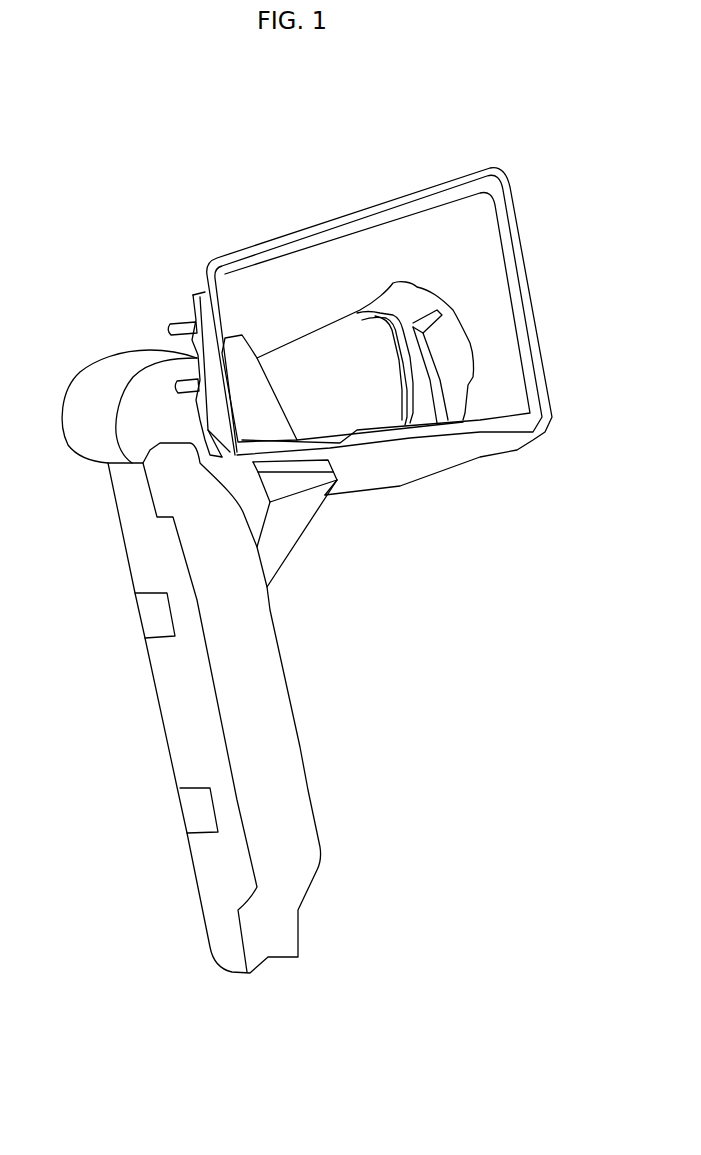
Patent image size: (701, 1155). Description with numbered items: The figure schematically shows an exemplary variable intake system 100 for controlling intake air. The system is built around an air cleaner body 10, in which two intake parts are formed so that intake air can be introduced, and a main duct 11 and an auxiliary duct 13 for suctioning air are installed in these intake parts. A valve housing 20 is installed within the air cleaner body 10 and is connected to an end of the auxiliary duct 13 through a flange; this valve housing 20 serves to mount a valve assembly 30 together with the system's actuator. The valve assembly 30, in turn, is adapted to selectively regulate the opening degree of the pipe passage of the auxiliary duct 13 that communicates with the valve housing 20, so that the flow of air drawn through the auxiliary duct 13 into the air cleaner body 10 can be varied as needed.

The variable intake system 100 is at (234, 118).
The air cleaner body 10 is at (530, 282).
The main duct 11 is at (275, 722).
The auxiliary duct 13 is at (107, 377).
The valve housing 20 is at (320, 360).
The valve assembly 30 is at (399, 312).